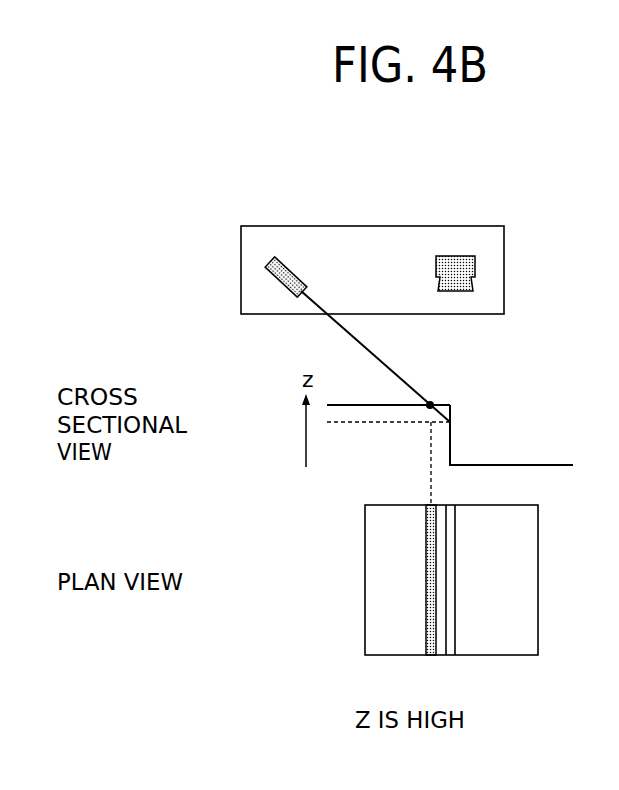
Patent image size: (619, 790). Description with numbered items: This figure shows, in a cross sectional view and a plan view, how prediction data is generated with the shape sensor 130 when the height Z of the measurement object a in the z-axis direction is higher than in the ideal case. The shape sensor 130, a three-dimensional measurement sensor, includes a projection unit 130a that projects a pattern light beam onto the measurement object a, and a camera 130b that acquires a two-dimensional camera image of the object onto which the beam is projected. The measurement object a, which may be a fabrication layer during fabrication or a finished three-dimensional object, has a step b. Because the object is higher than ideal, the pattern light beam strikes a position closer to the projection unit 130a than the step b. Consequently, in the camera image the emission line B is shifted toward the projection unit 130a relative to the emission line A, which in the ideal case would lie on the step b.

The shape sensor 130 is at (437, 226).
The projection unit 130a is at (287, 267).
The camera 130b is at (476, 267).
The measurement object a is at (375, 403).
The step b is at (452, 403).
The emission line A is at (457, 550).
The emission line B is at (427, 597).